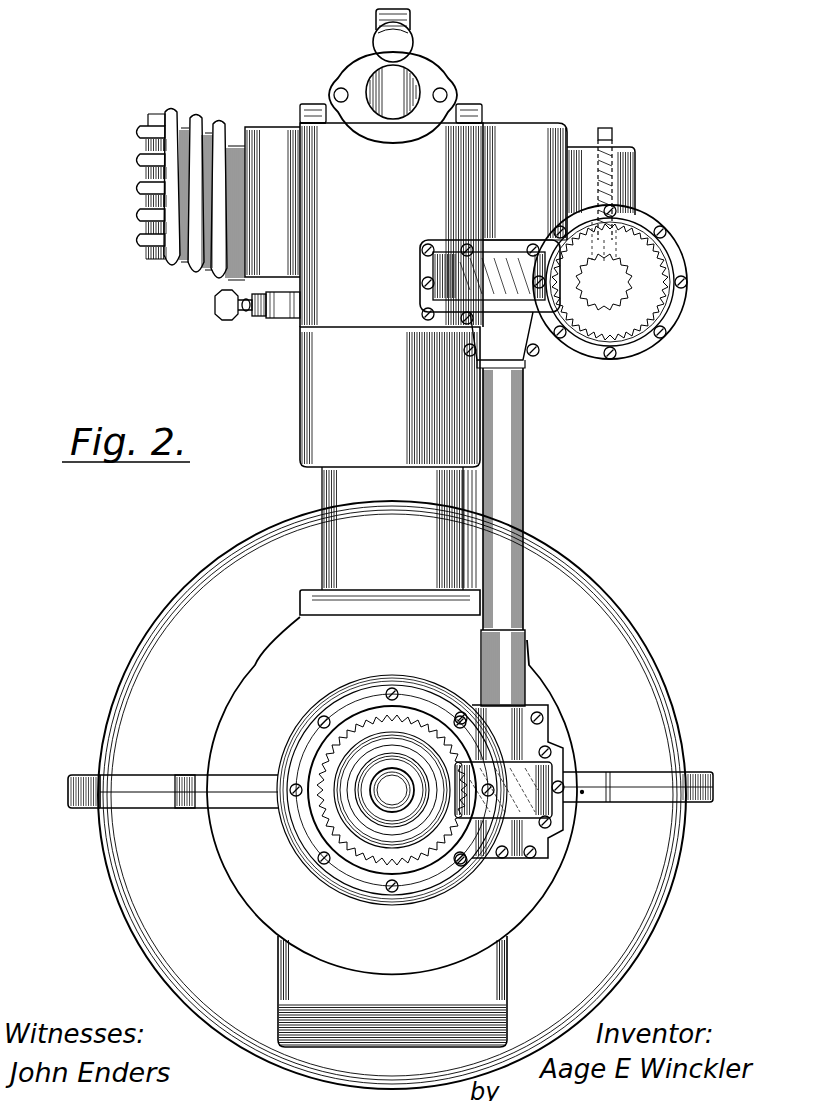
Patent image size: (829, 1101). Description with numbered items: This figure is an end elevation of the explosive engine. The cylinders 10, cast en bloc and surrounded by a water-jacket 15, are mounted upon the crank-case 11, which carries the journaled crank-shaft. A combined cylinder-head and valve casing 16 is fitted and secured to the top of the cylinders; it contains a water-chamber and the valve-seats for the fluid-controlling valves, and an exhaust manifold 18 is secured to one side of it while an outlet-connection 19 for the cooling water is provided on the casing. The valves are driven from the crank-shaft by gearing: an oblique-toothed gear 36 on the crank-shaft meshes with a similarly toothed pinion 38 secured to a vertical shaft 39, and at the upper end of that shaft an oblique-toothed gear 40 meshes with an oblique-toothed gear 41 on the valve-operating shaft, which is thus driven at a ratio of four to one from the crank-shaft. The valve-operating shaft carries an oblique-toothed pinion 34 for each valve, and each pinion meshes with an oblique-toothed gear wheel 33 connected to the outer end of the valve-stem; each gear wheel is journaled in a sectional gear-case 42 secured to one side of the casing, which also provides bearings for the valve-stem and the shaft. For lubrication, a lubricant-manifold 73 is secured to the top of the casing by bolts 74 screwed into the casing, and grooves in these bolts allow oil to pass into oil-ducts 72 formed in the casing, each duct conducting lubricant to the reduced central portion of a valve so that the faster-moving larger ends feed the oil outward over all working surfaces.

The cylinders 10 is at (390, 541).
The crank-case 11 is at (243, 686).
The water-jacket 15 is at (390, 397).
The combined cylinder-head and valve casing 16 is at (406, 215).
The exhaust manifold 18 is at (208, 214).
The outlet-connection 19 is at (412, 82).
The oblique-toothed gear wheel 33 is at (637, 172).
The oblique-toothed pinion 34 is at (688, 256).
The oblique-toothed gear 36 is at (300, 830).
The oblique-toothed pinion 38 is at (572, 808).
The vertical shaft 39 is at (508, 505).
The oblique-toothed gear 40 is at (432, 272).
The oblique-toothed gear 41 is at (637, 348).
The gear-case 42 is at (628, 148).
The oil-duct 72 is at (388, 112).
The lubricant-manifold 73 is at (372, 42).
The bolts 74 is at (376, 16).